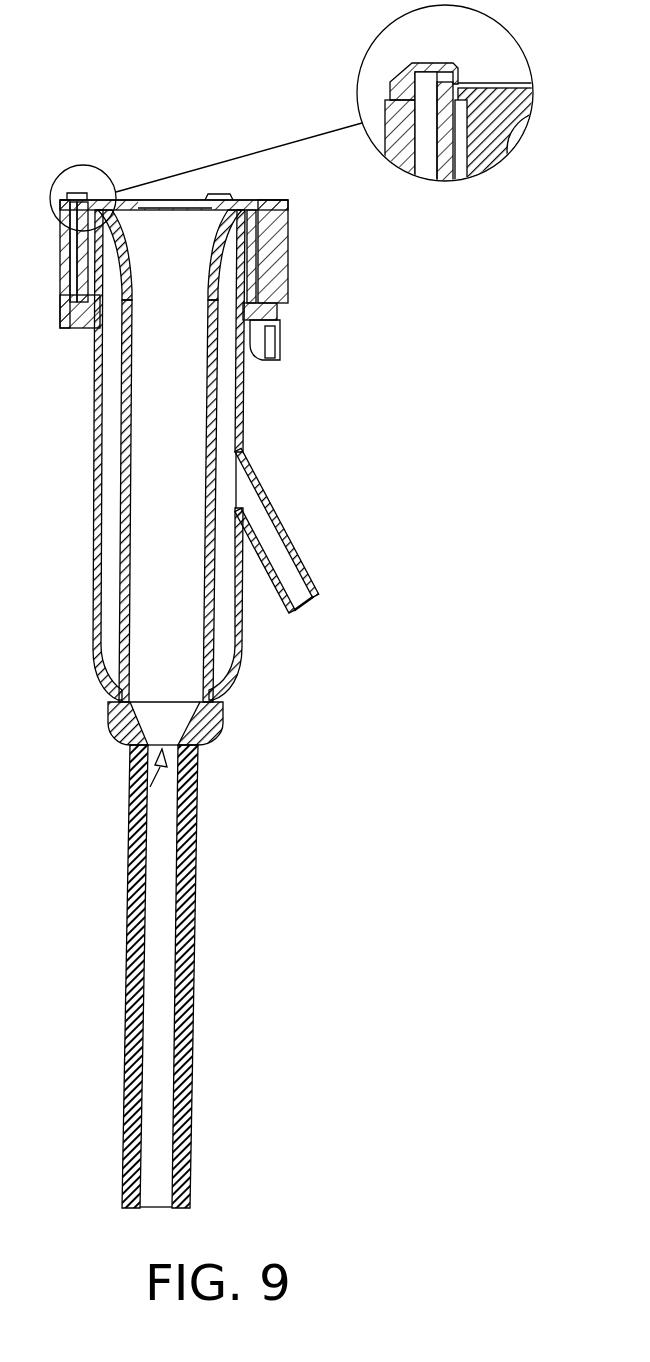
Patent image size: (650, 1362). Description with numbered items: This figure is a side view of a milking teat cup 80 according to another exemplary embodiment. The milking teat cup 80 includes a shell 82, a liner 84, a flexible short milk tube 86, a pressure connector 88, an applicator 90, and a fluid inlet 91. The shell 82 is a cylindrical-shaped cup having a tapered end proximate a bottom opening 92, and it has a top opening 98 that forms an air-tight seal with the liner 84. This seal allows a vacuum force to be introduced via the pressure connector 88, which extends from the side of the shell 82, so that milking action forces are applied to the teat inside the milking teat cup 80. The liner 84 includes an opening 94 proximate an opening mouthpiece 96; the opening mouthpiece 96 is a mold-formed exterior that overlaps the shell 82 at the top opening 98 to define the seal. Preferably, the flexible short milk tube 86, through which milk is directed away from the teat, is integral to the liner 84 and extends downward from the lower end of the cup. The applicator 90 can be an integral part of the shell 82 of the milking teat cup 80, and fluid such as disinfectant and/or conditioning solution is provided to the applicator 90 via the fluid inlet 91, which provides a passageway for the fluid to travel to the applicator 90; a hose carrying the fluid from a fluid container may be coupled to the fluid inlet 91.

The milking teat cup 80 is at (237, 667).
The shell 82 is at (95, 442).
The liner 84 is at (220, 413).
The flexible short milk tube 86 is at (195, 878).
The pressure connector 88 is at (282, 518).
The applicator 90 is at (287, 262).
The fluid inlet 91 is at (280, 338).
The bottom opening 92 is at (140, 803).
The opening 94 is at (183, 108).
The opening mouthpiece 96 is at (95, 170).
The top opening 98 is at (226, 246).